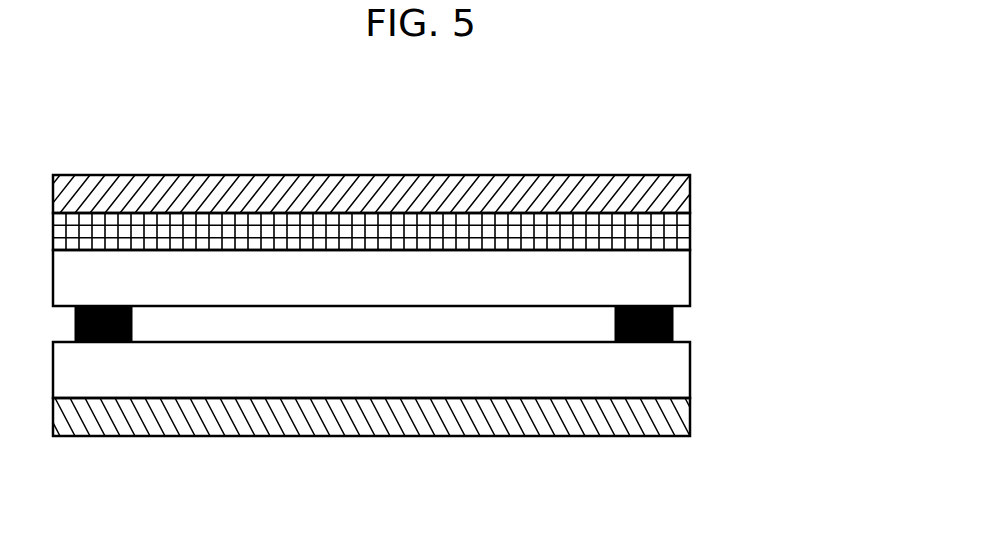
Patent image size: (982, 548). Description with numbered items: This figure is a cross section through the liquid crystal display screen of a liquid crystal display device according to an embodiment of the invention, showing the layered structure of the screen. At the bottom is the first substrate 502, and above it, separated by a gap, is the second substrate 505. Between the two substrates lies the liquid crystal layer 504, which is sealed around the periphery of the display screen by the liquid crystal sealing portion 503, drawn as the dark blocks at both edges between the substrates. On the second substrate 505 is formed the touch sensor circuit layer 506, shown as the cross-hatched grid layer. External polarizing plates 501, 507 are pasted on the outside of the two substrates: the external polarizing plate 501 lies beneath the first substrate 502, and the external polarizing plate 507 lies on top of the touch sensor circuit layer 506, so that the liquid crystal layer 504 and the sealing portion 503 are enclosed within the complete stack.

The external polarizing plate 501 is at (650, 420).
The first substrate 502 is at (643, 372).
The liquid crystal sealing portion 503 is at (673, 328).
The liquid crystal layer 504 is at (428, 326).
The second substrate 505 is at (643, 283).
The touch sensor circuit layer 506 is at (643, 232).
The external polarizing plate 507 is at (648, 197).